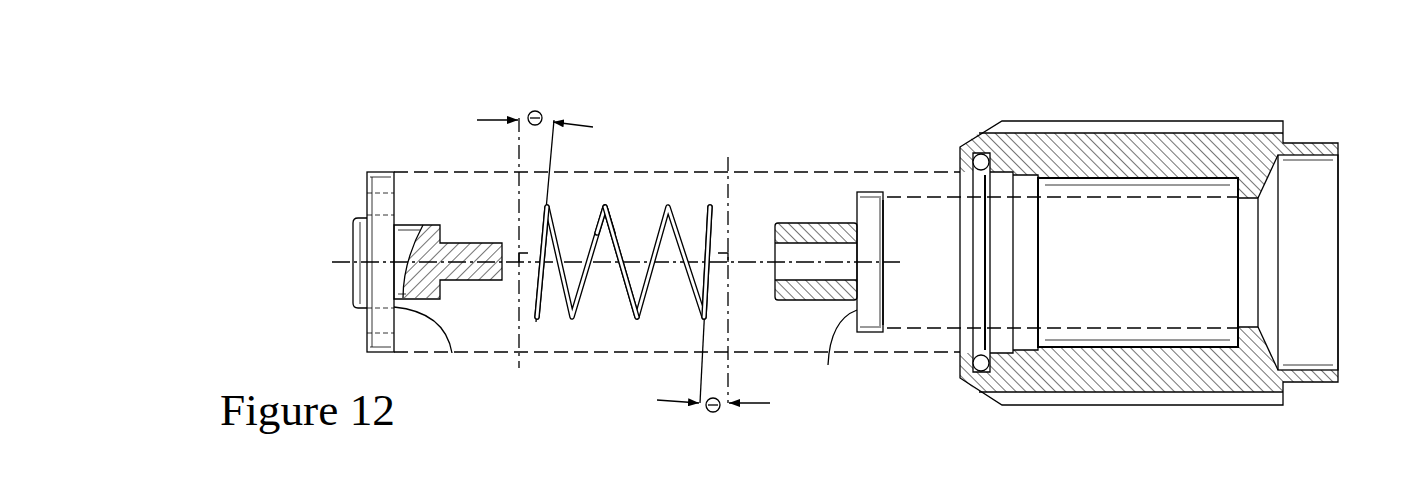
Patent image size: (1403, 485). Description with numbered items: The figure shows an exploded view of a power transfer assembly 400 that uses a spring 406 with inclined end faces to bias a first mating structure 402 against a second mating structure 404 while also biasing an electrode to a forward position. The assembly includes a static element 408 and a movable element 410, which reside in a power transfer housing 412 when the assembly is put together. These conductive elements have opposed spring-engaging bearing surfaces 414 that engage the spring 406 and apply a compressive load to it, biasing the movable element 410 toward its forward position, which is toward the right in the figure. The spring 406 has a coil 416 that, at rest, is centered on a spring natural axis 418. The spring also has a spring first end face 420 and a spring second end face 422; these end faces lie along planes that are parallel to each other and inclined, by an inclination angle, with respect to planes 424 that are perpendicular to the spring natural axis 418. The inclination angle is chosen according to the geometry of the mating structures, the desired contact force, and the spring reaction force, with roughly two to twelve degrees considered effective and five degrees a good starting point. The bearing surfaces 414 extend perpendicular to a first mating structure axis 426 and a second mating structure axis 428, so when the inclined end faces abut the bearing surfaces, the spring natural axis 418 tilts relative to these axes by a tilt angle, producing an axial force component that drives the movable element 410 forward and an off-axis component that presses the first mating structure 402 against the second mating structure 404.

The power transfer assembly 400 is at (437, 127).
The first mating structure 402 is at (468, 248).
The second mating structure 404 is at (817, 253).
The spring 406 is at (592, 338).
The static element 408 is at (360, 207).
The movable element 410 is at (868, 180).
The power transfer housing 412 is at (1192, 142).
The spring-engaging bearing surfaces 414 is at (627, 352).
The coil 416 is at (609, 202).
The spring natural axis 418 is at (602, 263).
The spring first end face 420 is at (532, 297).
The spring second end face 422 is at (719, 222).
The planes 424 is at (518, 342).
The first mating structure axis 426 is at (348, 262).
The second mating structure axis 428 is at (862, 262).